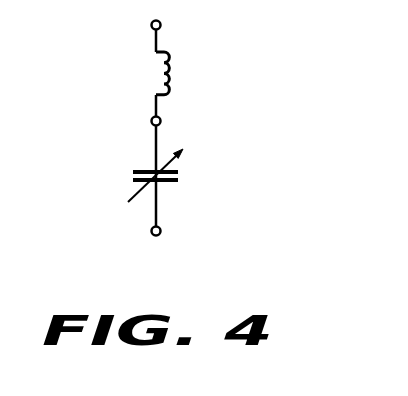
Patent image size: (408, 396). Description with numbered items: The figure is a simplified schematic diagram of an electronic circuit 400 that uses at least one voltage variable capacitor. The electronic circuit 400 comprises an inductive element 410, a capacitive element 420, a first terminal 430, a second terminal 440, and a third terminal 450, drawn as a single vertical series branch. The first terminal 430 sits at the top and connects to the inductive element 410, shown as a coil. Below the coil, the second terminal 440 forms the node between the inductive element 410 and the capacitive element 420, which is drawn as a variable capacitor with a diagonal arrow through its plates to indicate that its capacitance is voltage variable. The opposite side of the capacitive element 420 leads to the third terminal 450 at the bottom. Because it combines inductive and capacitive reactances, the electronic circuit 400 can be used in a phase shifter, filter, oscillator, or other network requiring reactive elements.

The electronic circuit 400 is at (285, 254).
The inductive element 410 is at (153, 73).
The capacitive element 420 is at (130, 177).
The first terminal 430 is at (151, 25).
The second terminal 440 is at (151, 121).
The third terminal 450 is at (151, 231).